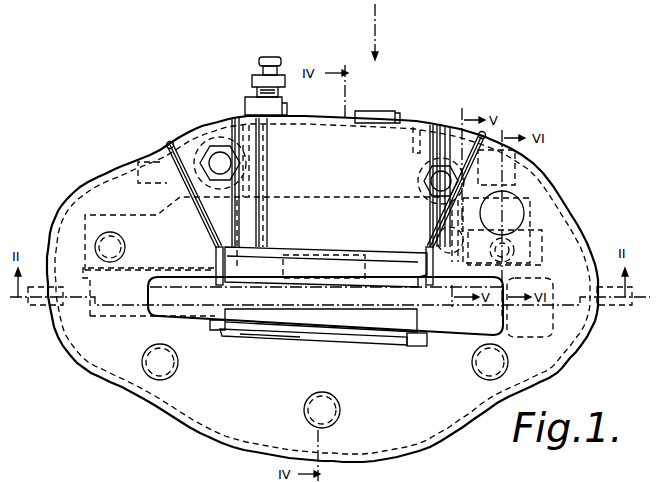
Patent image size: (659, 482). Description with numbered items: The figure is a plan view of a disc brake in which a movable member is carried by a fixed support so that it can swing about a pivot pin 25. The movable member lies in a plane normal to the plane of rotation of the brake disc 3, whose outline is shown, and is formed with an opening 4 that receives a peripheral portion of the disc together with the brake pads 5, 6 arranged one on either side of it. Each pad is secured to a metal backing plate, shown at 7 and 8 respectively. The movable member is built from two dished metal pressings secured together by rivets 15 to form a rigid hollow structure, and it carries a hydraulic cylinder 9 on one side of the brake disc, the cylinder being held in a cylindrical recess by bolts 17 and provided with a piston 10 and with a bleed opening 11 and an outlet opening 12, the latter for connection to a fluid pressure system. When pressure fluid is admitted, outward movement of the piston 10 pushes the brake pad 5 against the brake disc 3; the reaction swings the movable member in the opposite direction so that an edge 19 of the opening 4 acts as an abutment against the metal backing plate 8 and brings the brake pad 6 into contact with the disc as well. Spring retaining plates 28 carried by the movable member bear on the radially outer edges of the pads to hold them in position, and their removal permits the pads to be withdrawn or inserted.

The brake disc 3 is at (205, 310).
The opening 4 is at (165, 314).
The brake pad 5 is at (297, 274).
The brake pad 6 is at (408, 345).
The metal backing plate 7 is at (263, 257).
The metal backing plate 8 is at (345, 340).
The hydraulic cylinder 9 is at (223, 137).
The piston 10 is at (342, 257).
The bleed opening 11 is at (255, 80).
The outlet opening 12 is at (374, 114).
The rivets 15 is at (168, 364).
The bolts 17 is at (436, 181).
The edge 19 is at (285, 340).
The pivot pin 25 is at (120, 249).
The spring retaining plates 28 is at (208, 228).